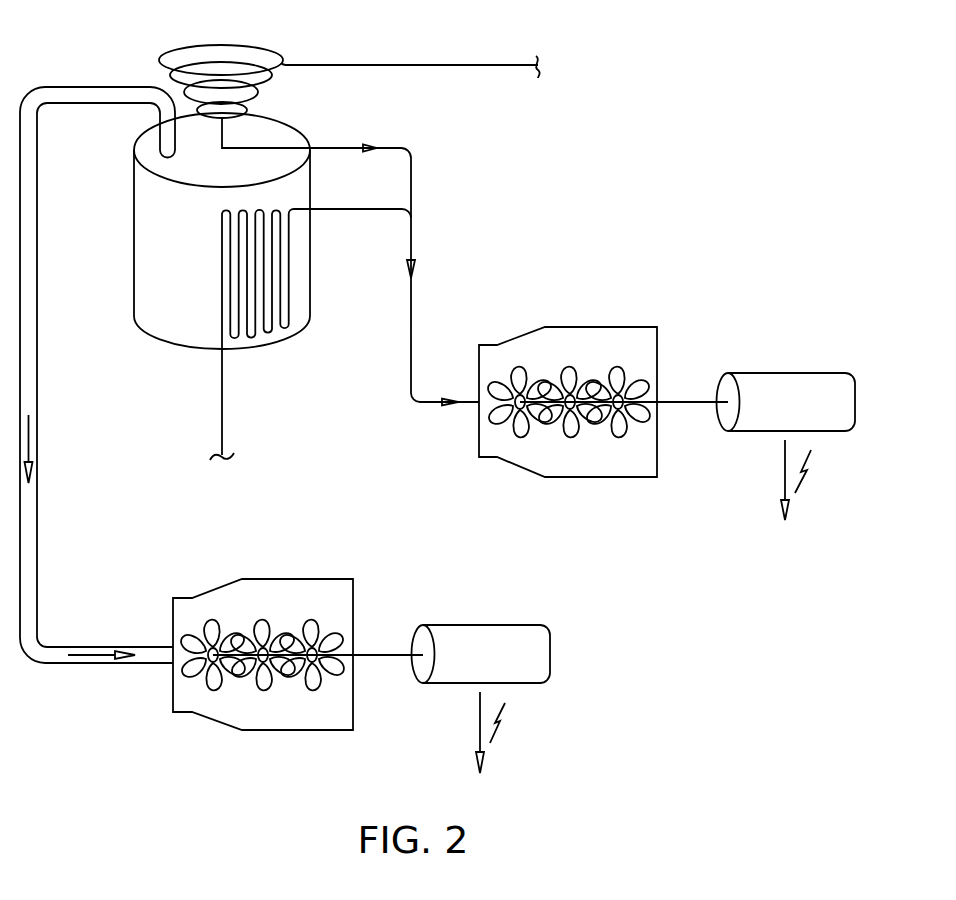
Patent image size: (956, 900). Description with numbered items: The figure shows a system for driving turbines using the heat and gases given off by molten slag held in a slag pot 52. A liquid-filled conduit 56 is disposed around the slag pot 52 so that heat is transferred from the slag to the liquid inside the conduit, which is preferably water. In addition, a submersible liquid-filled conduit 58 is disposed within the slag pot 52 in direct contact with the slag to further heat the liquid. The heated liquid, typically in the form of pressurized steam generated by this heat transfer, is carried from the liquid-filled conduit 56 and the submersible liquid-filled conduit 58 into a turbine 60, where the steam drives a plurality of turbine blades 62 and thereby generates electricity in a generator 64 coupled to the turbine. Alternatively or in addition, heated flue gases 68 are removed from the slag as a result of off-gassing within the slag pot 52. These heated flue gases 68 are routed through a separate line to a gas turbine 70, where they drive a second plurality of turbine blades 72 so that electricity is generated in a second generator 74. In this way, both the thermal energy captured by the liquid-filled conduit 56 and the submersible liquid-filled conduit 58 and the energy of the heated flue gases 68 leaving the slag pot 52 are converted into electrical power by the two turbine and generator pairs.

The slag pot 52 is at (134, 290).
The liquid-filled conduit 56 is at (352, 209).
The submersible liquid-filled conduit 58 is at (455, 65).
The turbine 60 is at (645, 327).
The turbine blades 62 is at (570, 372).
The generator 64 is at (806, 373).
The heated flue gases 68 is at (172, 163).
The gas turbine 70 is at (340, 579).
The turbine blades 72 is at (265, 625).
The generator 74 is at (500, 625).